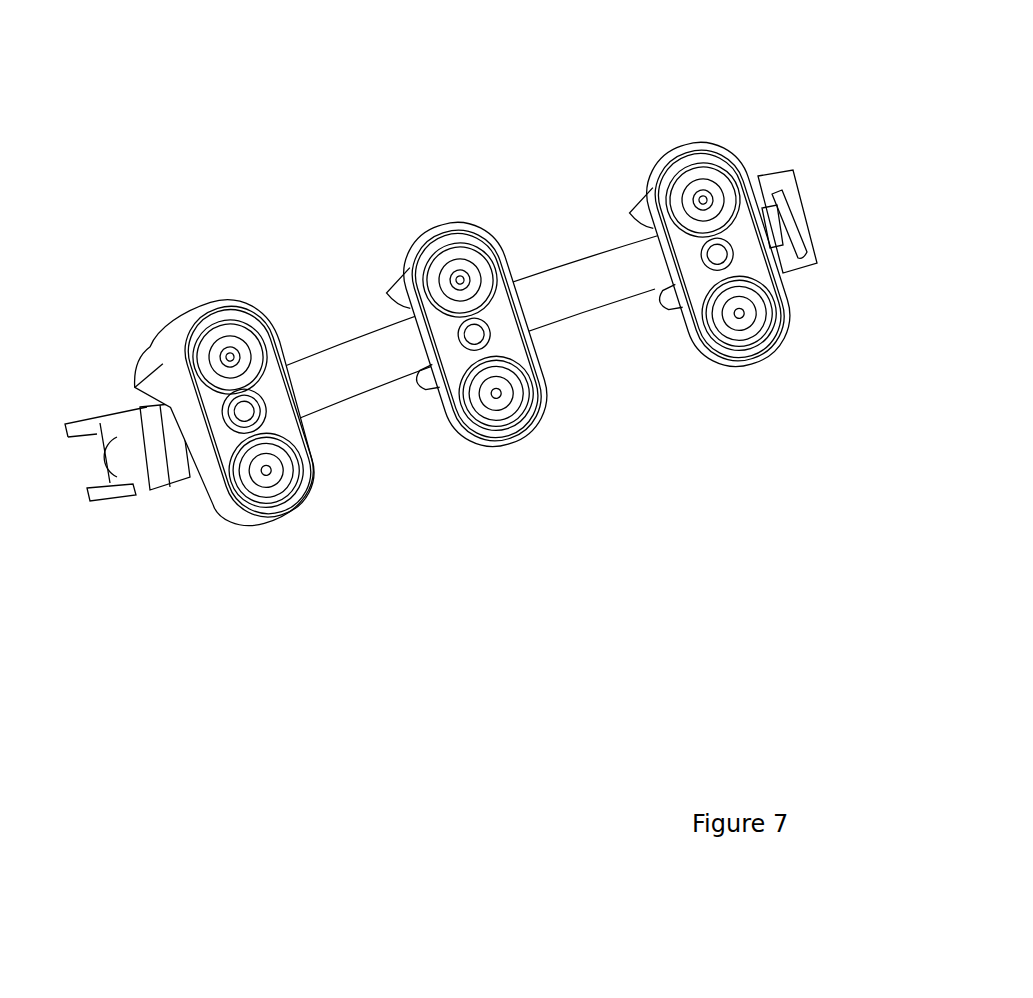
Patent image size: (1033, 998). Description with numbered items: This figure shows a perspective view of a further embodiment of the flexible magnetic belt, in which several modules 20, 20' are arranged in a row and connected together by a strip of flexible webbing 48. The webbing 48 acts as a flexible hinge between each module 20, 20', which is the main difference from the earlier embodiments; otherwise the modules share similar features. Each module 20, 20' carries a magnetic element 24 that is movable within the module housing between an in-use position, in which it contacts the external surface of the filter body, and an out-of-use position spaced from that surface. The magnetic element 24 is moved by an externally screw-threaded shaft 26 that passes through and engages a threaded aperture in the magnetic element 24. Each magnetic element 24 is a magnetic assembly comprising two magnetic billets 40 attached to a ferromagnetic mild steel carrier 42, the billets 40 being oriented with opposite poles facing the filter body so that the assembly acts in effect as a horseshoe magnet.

The module 20 is at (312, 334).
The module 20' is at (696, 202).
The magnetic element 24 is at (281, 473).
The screw-threaded shaft 26 is at (222, 420).
The magnetic billet 40 is at (224, 323).
The ferromagnetic carrier 42 is at (267, 396).
The flexible webbing 48 is at (593, 262).